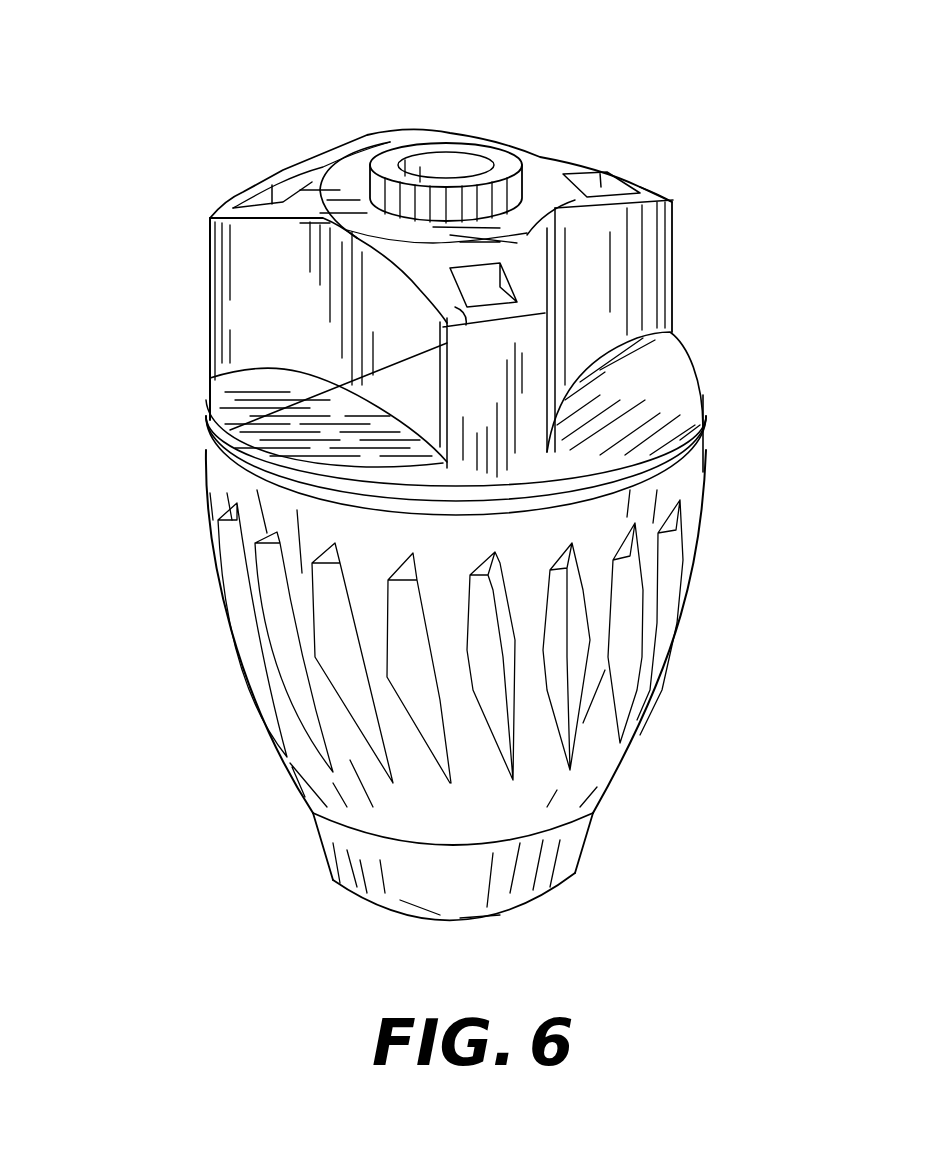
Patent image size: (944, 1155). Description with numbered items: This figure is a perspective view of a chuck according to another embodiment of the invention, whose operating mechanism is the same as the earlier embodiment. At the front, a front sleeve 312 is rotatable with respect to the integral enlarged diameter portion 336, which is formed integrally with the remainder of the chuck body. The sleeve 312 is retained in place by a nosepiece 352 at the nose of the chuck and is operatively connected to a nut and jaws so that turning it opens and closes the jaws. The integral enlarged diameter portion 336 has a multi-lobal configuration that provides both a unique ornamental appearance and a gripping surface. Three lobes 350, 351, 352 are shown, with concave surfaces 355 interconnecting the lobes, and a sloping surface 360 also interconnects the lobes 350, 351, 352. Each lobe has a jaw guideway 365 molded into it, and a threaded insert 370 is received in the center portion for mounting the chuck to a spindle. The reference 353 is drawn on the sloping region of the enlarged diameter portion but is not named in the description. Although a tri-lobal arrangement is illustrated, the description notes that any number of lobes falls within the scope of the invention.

The front sleeve 312 is at (612, 766).
The integral enlarged diameter portion 336 is at (652, 200).
The lobe 350 is at (210, 216).
The lobe 351 is at (647, 185).
The nosepiece 352 is at (552, 872).
The inclined surface 353 is at (230, 430).
The concave surface 355 is at (243, 293).
The sloping surface 360 is at (233, 397).
The jaw guideway 365 is at (300, 160).
The threaded insert 370 is at (445, 142).